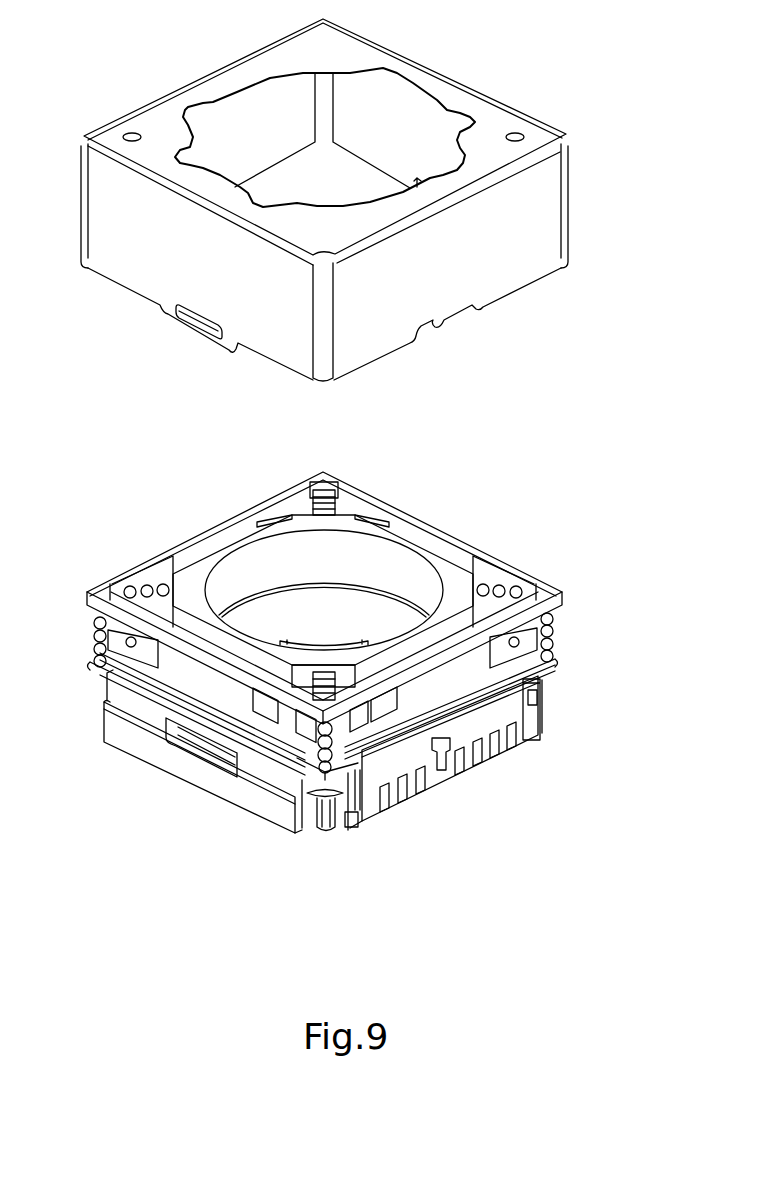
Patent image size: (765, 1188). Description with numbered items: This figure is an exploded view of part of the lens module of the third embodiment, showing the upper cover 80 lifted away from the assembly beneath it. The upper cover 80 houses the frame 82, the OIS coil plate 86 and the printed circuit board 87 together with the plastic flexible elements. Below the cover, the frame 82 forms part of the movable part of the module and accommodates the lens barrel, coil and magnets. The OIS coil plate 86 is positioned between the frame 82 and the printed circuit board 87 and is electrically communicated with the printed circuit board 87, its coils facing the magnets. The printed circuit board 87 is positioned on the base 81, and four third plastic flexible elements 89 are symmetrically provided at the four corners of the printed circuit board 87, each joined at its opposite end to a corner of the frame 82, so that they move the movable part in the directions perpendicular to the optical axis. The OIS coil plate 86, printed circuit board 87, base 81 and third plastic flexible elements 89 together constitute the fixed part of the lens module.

The upper cover 80 is at (549, 211).
The base 81 is at (273, 800).
The frame 82 is at (447, 672).
The OIS coil plate 86 is at (363, 755).
The printed circuit board 87 is at (513, 710).
The third plastic flexible elements 89 is at (540, 642).